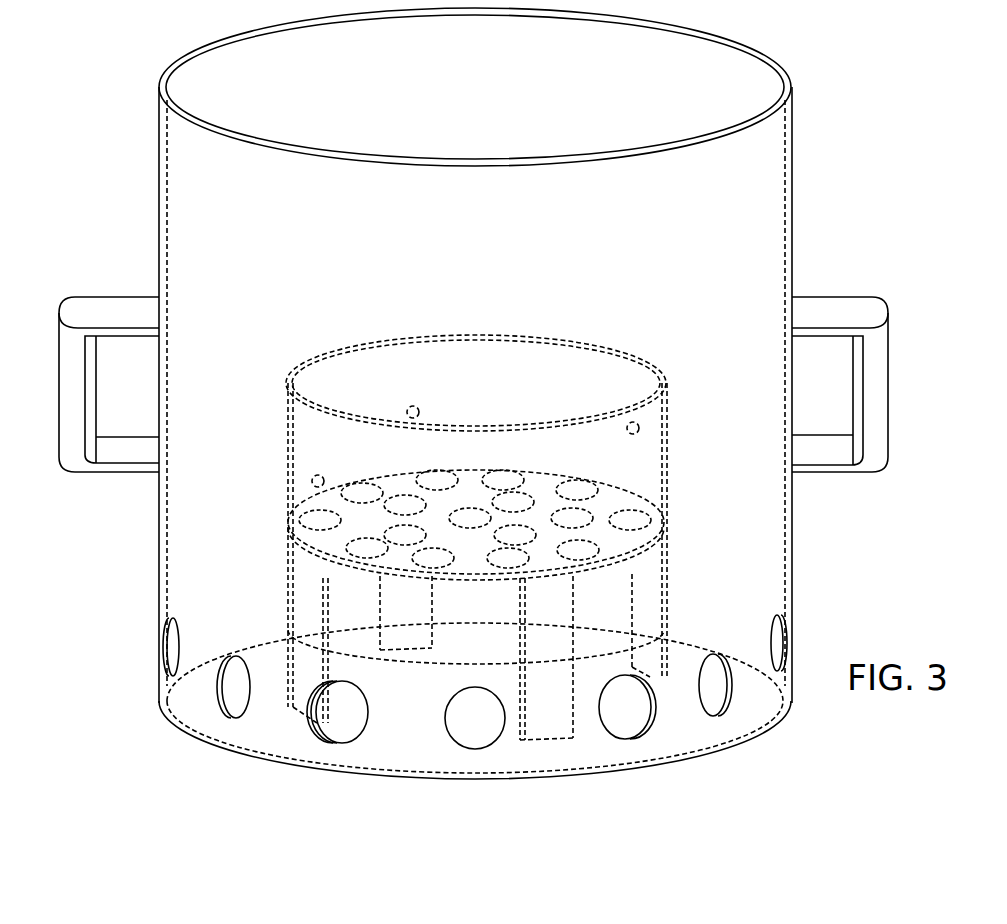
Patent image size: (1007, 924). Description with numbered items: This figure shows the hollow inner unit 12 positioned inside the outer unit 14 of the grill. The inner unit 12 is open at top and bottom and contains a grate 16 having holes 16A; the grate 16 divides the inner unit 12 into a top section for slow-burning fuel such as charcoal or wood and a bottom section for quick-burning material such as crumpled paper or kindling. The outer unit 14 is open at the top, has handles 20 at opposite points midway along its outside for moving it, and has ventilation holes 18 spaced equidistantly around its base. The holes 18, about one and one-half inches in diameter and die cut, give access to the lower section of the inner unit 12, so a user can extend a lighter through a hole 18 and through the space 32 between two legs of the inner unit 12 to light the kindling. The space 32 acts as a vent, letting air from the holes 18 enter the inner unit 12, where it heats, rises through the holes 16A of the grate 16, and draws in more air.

The inner unit 12 is at (670, 443).
The outer unit 14 is at (795, 175).
The grate 16 is at (313, 497).
The holes 16A is at (318, 525).
The ventilation holes 18 is at (227, 700).
The handles 20 is at (73, 308).
The space 32 is at (405, 702).